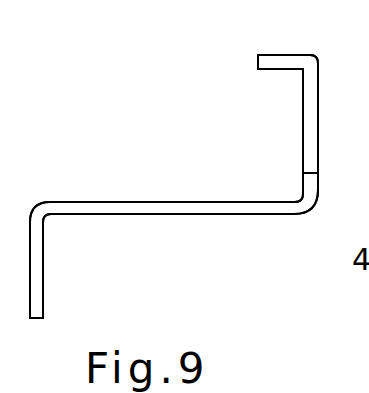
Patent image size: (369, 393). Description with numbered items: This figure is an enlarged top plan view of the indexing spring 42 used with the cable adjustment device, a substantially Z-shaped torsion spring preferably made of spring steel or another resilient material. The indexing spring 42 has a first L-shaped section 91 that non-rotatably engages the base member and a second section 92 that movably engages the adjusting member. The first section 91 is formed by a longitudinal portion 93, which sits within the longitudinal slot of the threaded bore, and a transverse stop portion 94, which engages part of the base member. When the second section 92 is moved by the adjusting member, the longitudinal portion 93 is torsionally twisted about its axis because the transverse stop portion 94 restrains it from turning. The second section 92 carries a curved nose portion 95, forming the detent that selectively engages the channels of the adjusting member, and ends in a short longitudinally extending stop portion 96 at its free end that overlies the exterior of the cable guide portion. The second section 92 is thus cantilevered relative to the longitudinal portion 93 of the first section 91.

The indexing spring 42 is at (152, 134).
The first L-shaped section 91 is at (126, 219).
The second section 92 is at (302, 117).
The longitudinal portion 93 is at (186, 208).
The transverse stop portion 94 is at (38, 275).
The curved nose portion 95 is at (302, 132).
The stop portion 96 is at (285, 55).